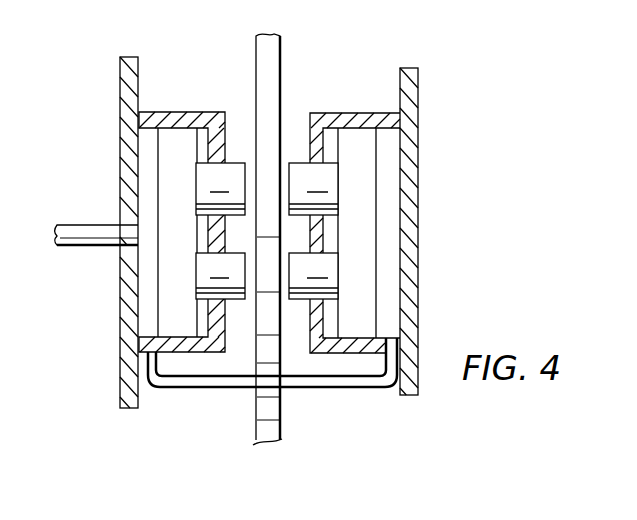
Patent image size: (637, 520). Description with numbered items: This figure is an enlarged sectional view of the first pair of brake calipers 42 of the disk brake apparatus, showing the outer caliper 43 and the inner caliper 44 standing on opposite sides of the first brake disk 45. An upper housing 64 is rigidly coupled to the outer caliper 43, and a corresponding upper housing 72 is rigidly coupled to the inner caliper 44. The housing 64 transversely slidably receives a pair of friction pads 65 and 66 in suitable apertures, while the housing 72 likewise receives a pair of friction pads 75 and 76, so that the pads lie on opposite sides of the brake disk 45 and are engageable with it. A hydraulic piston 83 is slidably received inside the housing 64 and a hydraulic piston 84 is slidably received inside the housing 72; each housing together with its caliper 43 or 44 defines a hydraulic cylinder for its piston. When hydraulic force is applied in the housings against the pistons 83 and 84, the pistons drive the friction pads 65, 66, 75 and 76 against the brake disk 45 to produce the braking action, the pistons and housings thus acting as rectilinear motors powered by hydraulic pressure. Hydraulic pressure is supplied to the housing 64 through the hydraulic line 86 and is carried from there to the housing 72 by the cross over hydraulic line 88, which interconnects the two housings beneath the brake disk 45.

The first pair of brake calipers 42 is at (275, 250).
The outer caliper 43 is at (132, 414).
The inner caliper 44 is at (410, 401).
The first brake disk 45 is at (286, 58).
The upper housing 64 is at (192, 106).
The friction pad 65 is at (238, 164).
The friction pad 66 is at (238, 300).
The upper housing 72 is at (353, 106).
The friction pad 75 is at (293, 163).
The friction pad 76 is at (295, 300).
The hydraulic piston 83 is at (172, 150).
The hydraulic piston 84 is at (363, 148).
The hydraulic line 86 is at (93, 230).
The cross over hydraulic line 88 is at (298, 391).